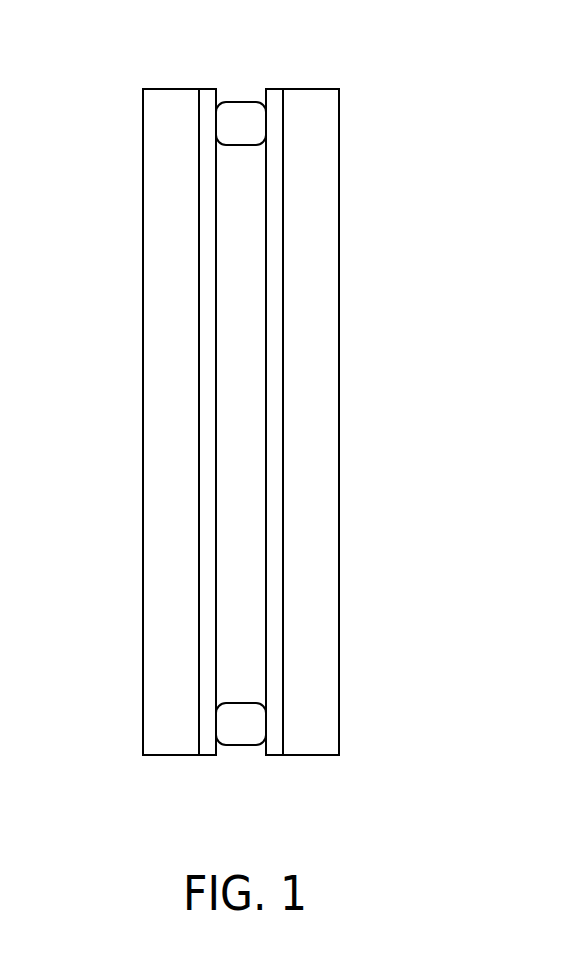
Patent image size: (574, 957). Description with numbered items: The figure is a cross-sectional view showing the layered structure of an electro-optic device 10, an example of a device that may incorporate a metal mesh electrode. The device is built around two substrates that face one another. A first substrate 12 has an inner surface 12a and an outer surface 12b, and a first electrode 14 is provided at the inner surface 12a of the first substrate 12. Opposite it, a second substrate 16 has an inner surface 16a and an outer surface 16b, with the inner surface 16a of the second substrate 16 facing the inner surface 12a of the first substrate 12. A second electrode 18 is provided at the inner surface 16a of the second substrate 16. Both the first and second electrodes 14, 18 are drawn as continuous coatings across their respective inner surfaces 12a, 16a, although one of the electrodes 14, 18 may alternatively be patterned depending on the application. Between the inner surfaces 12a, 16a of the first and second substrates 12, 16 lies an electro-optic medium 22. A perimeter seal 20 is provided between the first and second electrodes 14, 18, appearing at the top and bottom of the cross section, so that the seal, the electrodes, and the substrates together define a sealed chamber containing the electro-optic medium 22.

The electro-optic device 10 is at (253, 50).
The first substrate 12 is at (157, 196).
The inner surface of the first substrate 12a is at (202, 397).
The outer surface of the first substrate 12b is at (143, 255).
The first electrode 14 is at (207, 570).
The second substrate 16 is at (308, 200).
The inner surface of the second substrate 16a is at (280, 372).
The outer surface of the second substrate 16b is at (339, 235).
The second electrode 18 is at (273, 527).
The perimeter seal 20 is at (227, 117).
The electro-optic medium 22 is at (240, 647).